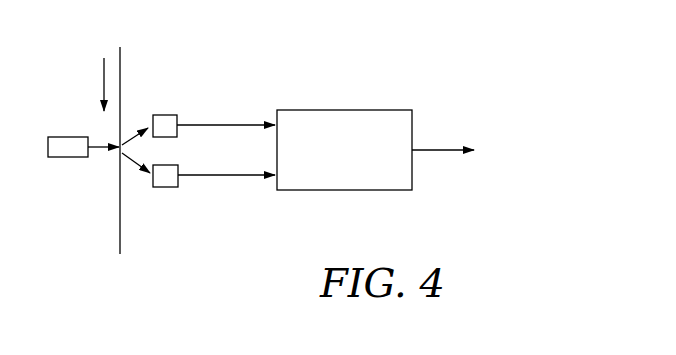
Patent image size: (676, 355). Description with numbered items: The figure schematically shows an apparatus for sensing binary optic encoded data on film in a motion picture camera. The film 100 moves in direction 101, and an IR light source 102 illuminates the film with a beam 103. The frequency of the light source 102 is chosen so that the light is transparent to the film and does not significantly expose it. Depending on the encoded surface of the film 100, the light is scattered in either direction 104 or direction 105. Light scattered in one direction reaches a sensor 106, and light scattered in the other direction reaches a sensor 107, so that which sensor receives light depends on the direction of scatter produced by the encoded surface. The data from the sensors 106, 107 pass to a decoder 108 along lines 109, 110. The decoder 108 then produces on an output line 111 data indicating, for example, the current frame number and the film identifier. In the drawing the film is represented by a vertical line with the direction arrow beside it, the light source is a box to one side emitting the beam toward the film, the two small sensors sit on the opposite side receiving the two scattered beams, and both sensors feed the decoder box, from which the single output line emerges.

The film 100 is at (120, 58).
The direction of film movement 101 is at (100, 78).
The IR light source 102 is at (72, 157).
The beam 103 is at (95, 148).
The scatter direction 104 is at (137, 165).
The scatter direction 105 is at (137, 128).
The sensor 106 is at (174, 165).
The sensor 107 is at (178, 122).
The decoder 108 is at (395, 110).
The line 109 is at (240, 124).
The line 110 is at (230, 177).
The output line 111 is at (437, 149).